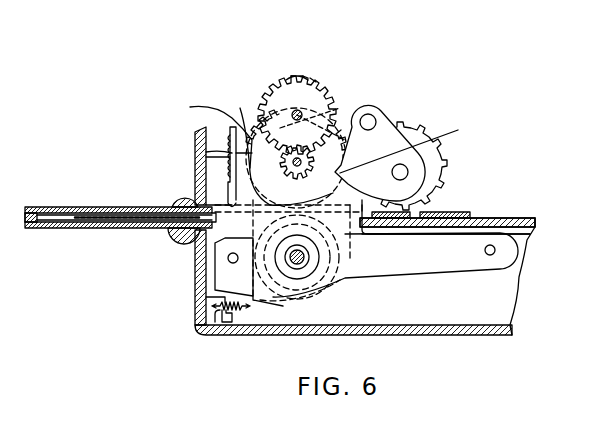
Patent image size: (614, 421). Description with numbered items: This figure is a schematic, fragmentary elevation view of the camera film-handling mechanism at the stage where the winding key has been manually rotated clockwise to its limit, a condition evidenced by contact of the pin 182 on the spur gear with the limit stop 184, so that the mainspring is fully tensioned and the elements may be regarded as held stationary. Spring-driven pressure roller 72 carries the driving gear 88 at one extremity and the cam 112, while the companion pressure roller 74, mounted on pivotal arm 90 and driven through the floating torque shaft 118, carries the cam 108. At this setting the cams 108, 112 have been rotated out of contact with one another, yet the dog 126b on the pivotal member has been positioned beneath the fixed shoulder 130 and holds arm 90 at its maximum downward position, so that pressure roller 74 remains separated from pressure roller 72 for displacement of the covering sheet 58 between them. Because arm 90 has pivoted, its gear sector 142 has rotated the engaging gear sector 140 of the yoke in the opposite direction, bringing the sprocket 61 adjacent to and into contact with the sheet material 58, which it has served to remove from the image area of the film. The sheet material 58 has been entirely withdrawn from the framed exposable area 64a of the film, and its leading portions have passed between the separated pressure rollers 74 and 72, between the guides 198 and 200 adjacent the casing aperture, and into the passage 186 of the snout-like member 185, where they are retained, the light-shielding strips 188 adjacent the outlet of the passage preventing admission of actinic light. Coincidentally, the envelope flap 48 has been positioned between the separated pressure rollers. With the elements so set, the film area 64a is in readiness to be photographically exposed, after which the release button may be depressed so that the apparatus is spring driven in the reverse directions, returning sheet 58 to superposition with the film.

The envelope flap 48 is at (338, 240).
The covering sheet 58 is at (437, 224).
The sprocket 61 is at (447, 162).
The framed exposable area 64a is at (530, 222).
The pressure roller 72 is at (229, 150).
The pressure roller 74 is at (340, 274).
The driving gear 88 is at (260, 100).
The pivotal arm 90 is at (417, 259).
The cam 108 is at (270, 298).
The cam 112 is at (192, 107).
The shaft 118 is at (300, 266).
The dog 126b is at (229, 316).
The fixed shoulder 130 is at (215, 312).
The gear sector 140 is at (403, 140).
The gear sector 142 is at (450, 133).
The pin 182 is at (295, 78).
The limit stop 184 is at (314, 78).
The snout-like member 185 is at (72, 206).
The passage 186 is at (55, 221).
The light-shielding strips 188 is at (23, 222).
The guide means 198 is at (214, 208).
The guide means 200 is at (196, 243).